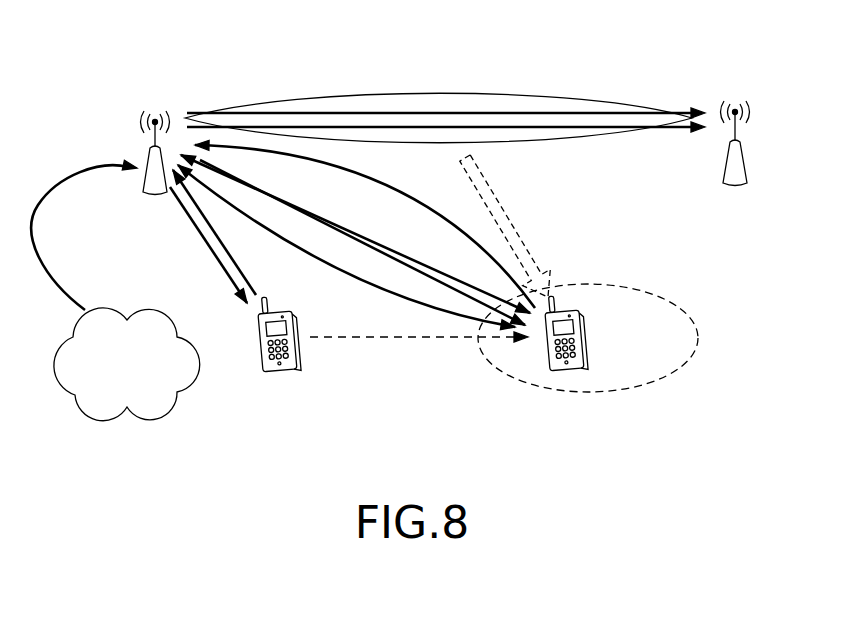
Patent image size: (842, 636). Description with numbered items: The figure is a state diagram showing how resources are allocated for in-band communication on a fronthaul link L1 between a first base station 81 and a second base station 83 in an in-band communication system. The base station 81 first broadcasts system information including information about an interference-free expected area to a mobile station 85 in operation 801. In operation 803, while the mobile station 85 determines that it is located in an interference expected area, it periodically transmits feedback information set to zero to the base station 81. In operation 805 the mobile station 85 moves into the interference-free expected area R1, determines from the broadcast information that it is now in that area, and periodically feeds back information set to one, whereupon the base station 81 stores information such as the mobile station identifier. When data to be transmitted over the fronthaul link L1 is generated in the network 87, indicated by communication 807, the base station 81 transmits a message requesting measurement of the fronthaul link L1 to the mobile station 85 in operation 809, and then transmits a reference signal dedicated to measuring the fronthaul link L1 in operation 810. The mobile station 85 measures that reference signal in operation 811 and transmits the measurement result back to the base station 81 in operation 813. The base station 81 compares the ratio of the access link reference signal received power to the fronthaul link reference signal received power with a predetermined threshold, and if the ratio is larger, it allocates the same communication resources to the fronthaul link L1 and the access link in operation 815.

The BS 1 81 is at (143, 160).
The BS 2 83 is at (722, 165).
The MS 1 85 is at (260, 344).
The network 87 is at (80, 412).
The operation of broadcasting system information 801 is at (200, 233).
The operation of transmitting feedback information in interference expected area 803 is at (262, 282).
The operation of moving to interference-free expected area 805 is at (453, 293).
The communication from network 807 is at (63, 192).
The operation of transmitting measurement request message 809 is at (378, 244).
The operation of transmitting reference signal 810 is at (590, 128).
The operation of measuring reference signal 811 is at (530, 247).
The operation of transmitting measurement result 813 is at (413, 194).
The operation of allocating same communication resources 815 is at (452, 112).
The fronthaul link L1 is at (538, 93).
The interference-free expected area R1 is at (672, 300).